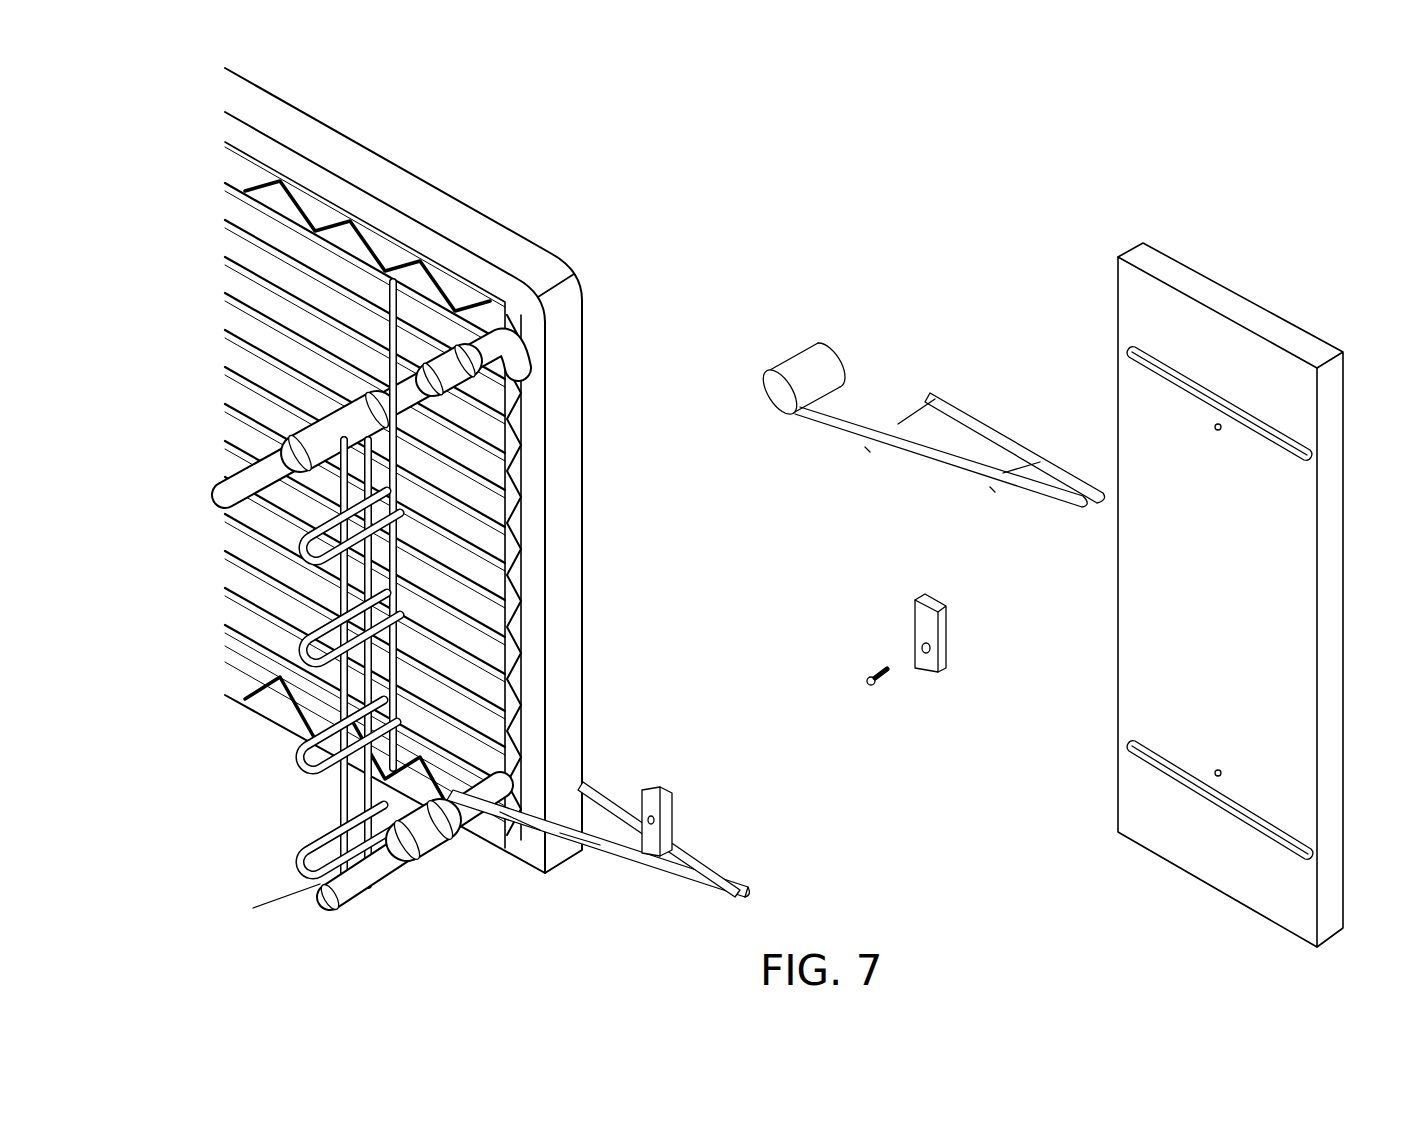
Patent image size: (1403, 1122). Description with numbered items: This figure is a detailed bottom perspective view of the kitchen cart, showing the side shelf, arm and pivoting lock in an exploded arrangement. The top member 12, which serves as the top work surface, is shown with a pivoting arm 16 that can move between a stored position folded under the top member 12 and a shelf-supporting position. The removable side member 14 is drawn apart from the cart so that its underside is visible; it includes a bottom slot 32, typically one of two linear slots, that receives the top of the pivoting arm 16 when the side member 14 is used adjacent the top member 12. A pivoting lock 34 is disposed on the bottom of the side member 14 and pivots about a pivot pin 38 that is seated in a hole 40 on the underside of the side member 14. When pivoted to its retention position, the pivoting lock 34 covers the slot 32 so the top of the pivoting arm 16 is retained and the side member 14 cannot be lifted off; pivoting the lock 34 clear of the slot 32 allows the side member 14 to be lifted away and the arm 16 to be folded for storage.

The top member 12 is at (503, 224).
The side member 14 is at (1180, 545).
The pivoting arm 16 is at (828, 360).
The bottom slot 32 is at (1133, 352).
The pivoting lock 34 is at (914, 612).
The pivot pin 38 is at (866, 681).
The hole 40 is at (1218, 768).